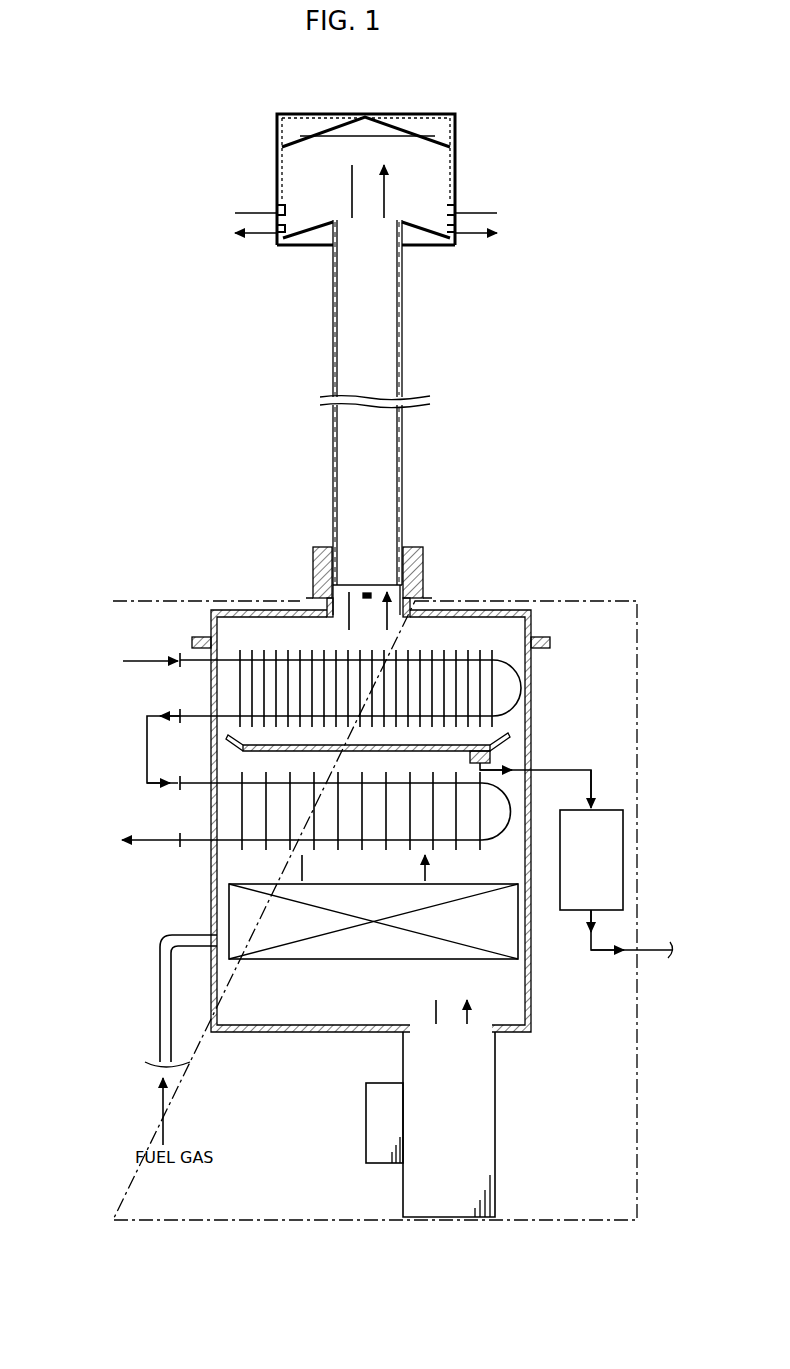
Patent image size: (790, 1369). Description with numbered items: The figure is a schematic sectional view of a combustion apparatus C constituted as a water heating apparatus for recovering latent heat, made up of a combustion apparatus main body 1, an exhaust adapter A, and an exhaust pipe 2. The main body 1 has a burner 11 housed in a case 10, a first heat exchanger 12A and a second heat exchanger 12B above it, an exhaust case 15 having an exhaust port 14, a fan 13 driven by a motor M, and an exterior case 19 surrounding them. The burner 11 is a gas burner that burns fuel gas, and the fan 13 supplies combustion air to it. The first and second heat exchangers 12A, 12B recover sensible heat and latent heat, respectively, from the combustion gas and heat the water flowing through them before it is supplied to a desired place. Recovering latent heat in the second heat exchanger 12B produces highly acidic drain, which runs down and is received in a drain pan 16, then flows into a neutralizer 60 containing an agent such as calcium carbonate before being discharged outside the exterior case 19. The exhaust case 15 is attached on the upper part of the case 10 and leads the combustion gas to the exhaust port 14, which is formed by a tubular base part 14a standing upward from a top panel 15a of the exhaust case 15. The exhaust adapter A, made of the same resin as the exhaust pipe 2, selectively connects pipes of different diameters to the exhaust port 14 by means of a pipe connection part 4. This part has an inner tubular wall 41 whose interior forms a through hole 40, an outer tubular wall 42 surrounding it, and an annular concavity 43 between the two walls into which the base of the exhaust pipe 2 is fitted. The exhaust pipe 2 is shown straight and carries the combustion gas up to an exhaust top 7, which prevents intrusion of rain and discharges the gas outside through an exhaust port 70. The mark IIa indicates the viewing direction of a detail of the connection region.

The combustion apparatus main body 1 is at (140, 583).
The exhaust pipe 2 is at (402, 326).
The pipe connection part 4 is at (409, 538).
The exhaust top 7 is at (455, 154).
The case 10 is at (211, 877).
The burner 11 is at (235, 905).
The first heat exchanger 12A is at (262, 775).
The second heat exchanger 12B is at (253, 630).
The fan 13 is at (412, 1203).
The exhaust port 14 is at (325, 595).
The tubular base part 14a is at (412, 603).
The exhaust case 15 is at (218, 612).
The top panel 15a is at (513, 612).
The drain pan 16 is at (500, 744).
The exterior case 19 is at (113, 712).
The through hole 40 is at (350, 567).
The inner tubular wall 41 is at (425, 548).
The outer tubular wall 42 is at (420, 565).
The annular concavity 43 is at (418, 590).
The neutralizer 60 is at (608, 872).
The exhaust port 70 is at (272, 228).
The exhaust adapter A is at (318, 547).
The combustion apparatus C is at (165, 152).
The motor M is at (380, 1100).
The section view IIa is at (436, 582).